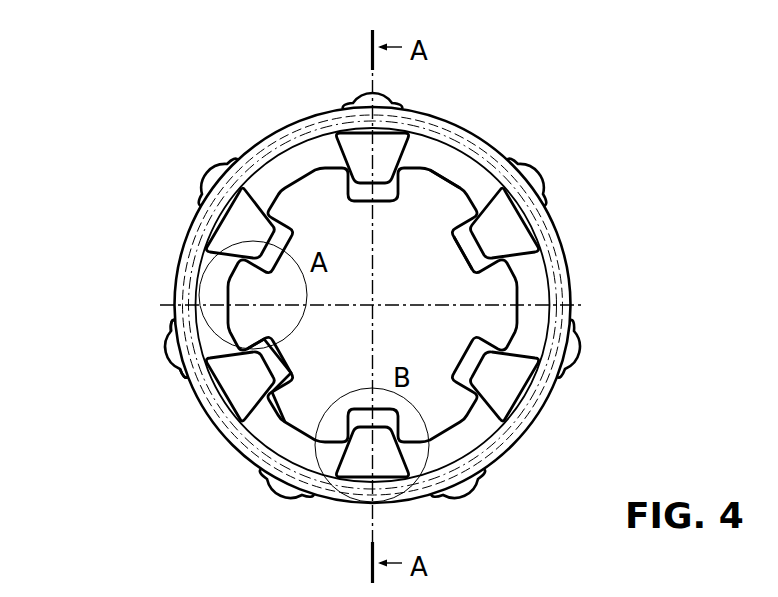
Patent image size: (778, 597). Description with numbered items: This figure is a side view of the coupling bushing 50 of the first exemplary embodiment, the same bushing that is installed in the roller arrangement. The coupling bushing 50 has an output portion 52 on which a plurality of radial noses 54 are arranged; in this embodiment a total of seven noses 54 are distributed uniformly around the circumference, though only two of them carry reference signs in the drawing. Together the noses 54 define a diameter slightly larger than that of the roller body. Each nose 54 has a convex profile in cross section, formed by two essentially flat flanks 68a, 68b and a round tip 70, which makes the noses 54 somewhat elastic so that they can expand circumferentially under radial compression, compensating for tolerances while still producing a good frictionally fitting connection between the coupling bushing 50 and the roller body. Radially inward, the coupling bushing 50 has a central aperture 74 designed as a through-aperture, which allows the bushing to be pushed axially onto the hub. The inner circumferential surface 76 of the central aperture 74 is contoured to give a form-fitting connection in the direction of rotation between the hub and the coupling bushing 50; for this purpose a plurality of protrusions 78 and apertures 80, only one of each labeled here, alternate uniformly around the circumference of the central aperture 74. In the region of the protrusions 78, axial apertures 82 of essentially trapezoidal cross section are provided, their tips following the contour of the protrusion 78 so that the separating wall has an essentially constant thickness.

The coupling bushing 50 is at (166, 148).
The output portion 52 is at (463, 123).
The radial noses 54 is at (538, 176).
The flank 68a is at (172, 330).
The flank 68b is at (178, 375).
The round tip 70 is at (166, 351).
The central aperture 74 is at (432, 325).
The inner circumferential surface 76 is at (285, 410).
The protrusion 78 is at (458, 250).
The aperture 80 is at (442, 188).
The axial aperture 82 is at (498, 237).